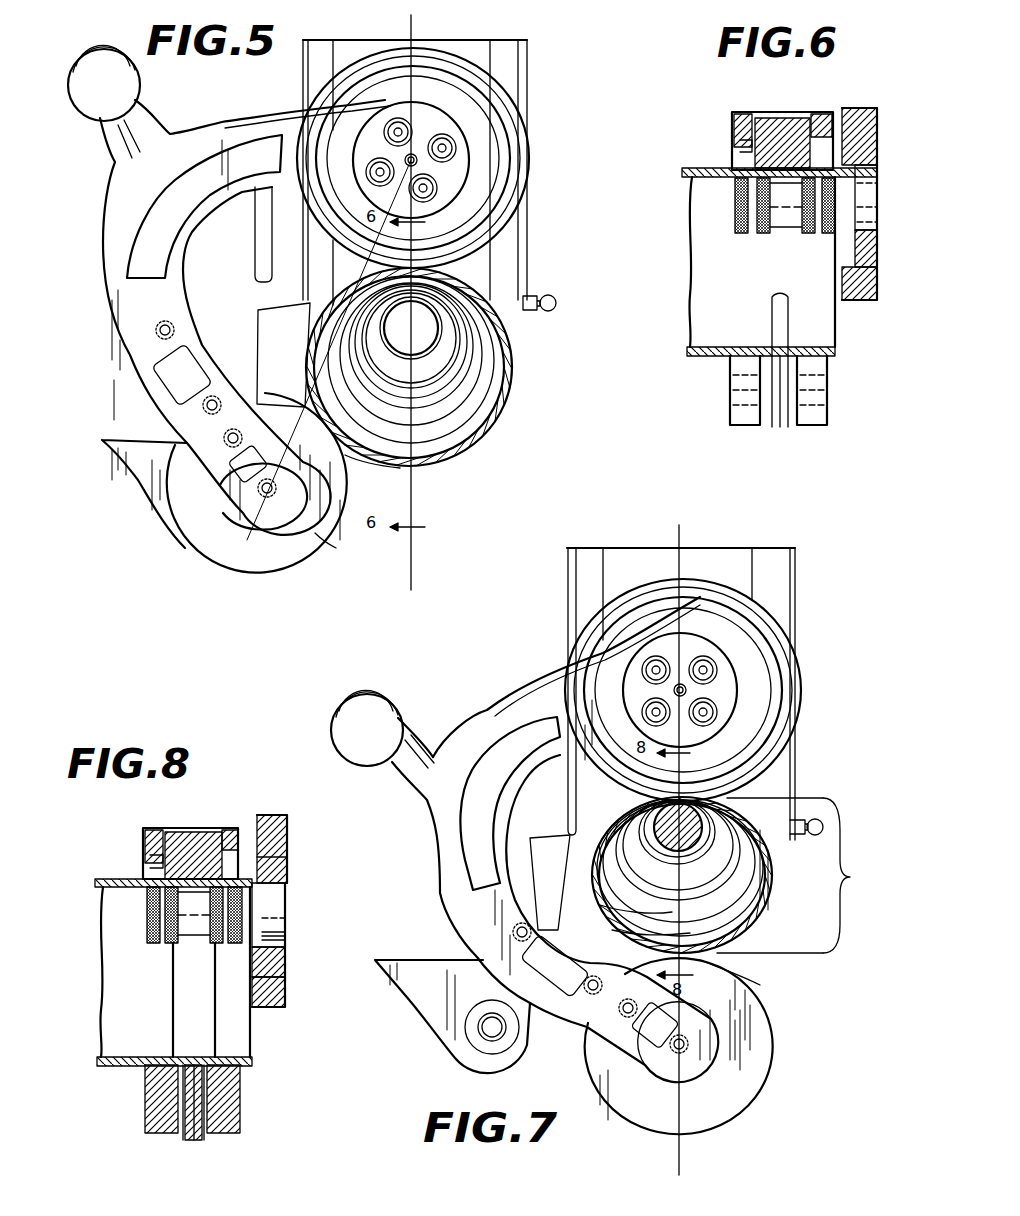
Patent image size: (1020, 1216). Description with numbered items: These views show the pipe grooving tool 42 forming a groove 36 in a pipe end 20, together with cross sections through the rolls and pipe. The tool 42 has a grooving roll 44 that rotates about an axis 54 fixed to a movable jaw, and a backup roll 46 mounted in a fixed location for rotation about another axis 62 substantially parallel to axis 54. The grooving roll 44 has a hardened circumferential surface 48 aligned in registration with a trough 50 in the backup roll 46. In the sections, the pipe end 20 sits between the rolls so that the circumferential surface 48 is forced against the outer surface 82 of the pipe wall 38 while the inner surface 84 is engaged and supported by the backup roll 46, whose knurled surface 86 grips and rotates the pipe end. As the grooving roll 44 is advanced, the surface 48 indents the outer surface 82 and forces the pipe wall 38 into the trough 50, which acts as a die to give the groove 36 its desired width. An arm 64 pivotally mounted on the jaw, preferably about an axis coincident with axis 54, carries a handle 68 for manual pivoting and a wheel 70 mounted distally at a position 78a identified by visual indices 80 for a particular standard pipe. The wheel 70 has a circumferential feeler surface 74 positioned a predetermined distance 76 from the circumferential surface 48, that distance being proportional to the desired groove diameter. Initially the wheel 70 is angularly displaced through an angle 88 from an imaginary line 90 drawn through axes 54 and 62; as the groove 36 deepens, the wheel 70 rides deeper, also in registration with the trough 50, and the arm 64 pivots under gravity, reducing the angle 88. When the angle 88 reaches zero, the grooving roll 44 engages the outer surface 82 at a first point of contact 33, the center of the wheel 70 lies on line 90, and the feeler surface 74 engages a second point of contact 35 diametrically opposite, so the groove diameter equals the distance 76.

In FIG. 5, the pipe end 20 is at (442, 460).
In FIG. 6, the pipe end 20 is at (820, 313).
In FIG. 8, the pipe end 20 is at (132, 970).
In FIG. 7, the pipe end 20 is at (740, 928).
In FIG. 7, the first point of contact 33 is at (668, 812).
In FIG. 7, the second point of contact 35 is at (614, 930).
In FIG. 8, the groove 36 is at (170, 1045).
In FIG. 7, the groove 36 is at (600, 905).
In FIG. 5, the pipe wall 38 is at (506, 400).
In FIG. 6, the pipe wall 38 is at (701, 358).
In FIG. 8, the pipe wall 38 is at (105, 881).
In FIG. 7, the pipe wall 38 is at (760, 896).
In FIG. 5, the pipe grooving tool 42 is at (421, 175).
In FIG. 7, the pipe grooving tool 42 is at (720, 676).
In FIG. 5, the grooving roll 44 is at (510, 100).
In FIG. 6, the grooving roll 44 is at (738, 132).
In FIG. 8, the grooving roll 44 is at (195, 845).
In FIG. 7, the grooving roll 44 is at (795, 732).
In FIG. 5, the backup roll 46 is at (475, 290).
In FIG. 6, the backup roll 46 is at (763, 236).
In FIG. 8, the backup roll 46 is at (155, 950).
In FIG. 7, the backup roll 46 is at (770, 872).
In FIG. 5, the hardened circumferential surface 48 is at (528, 194).
In FIG. 6, the hardened circumferential surface 48 is at (760, 160).
In FIG. 8, the hardened circumferential surface 48 is at (235, 862).
In FIG. 7, the hardened circumferential surface 48 is at (785, 614).
In FIG. 6, the trough 50 is at (778, 240).
In FIG. 8, the trough 50 is at (222, 950).
In FIG. 5, the axis 54 is at (398, 132).
In FIG. 7, the axis 54 is at (682, 688).
In FIG. 5, the axis 62 is at (245, 336).
In FIG. 7, the axis 62 is at (580, 876).
In FIG. 5, the arm 64 is at (160, 312).
In FIG. 6, the arm 64 is at (815, 428).
In FIG. 8, the arm 64 is at (145, 1120).
In FIG. 7, the arm 64 is at (482, 922).
In FIG. 5, the handle 68 is at (104, 122).
In FIG. 7, the handle 68 is at (430, 782).
In FIG. 5, the wheel 70 is at (248, 575).
In FIG. 6, the wheel 70 is at (800, 388).
In FIG. 8, the wheel 70 is at (197, 1145).
In FIG. 7, the wheel 70 is at (760, 1080).
In FIG. 5, the feeler surface 74 is at (300, 560).
In FIG. 6, the feeler surface 74 is at (812, 368).
In FIG. 8, the feeler surface 74 is at (205, 1090).
In FIG. 7, the feeler surface 74 is at (778, 1012).
In FIG. 7, the predetermined distance 76 is at (801, 875).
In FIG. 5, the position 78a is at (262, 492).
In FIG. 7, the position 78a is at (676, 1052).
In FIG. 5, the visual indices 80 is at (328, 545).
In FIG. 7, the visual indices 80 is at (760, 985).
In FIG. 5, the outer surface 82 is at (518, 371).
In FIG. 6, the outer surface 82 is at (838, 115).
In FIG. 8, the outer surface 82 is at (116, 872).
In FIG. 7, the outer surface 82 is at (590, 845).
In FIG. 6, the inner surface 84 is at (684, 173).
In FIG. 8, the inner surface 84 is at (112, 888).
In FIG. 6, the knurled surface 86 is at (808, 236).
In FIG. 5, the angle 88 is at (374, 467).
In FIG. 5, the imaginary line 90 is at (415, 24).
In FIG. 7, the imaginary line 90 is at (679, 545).